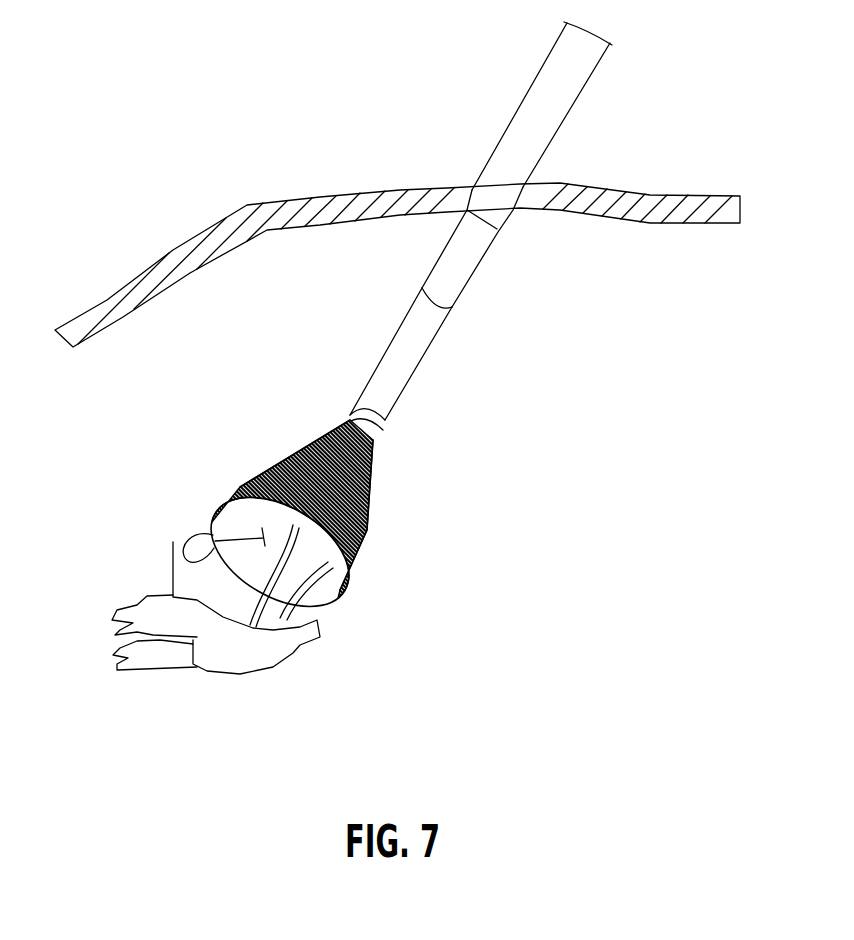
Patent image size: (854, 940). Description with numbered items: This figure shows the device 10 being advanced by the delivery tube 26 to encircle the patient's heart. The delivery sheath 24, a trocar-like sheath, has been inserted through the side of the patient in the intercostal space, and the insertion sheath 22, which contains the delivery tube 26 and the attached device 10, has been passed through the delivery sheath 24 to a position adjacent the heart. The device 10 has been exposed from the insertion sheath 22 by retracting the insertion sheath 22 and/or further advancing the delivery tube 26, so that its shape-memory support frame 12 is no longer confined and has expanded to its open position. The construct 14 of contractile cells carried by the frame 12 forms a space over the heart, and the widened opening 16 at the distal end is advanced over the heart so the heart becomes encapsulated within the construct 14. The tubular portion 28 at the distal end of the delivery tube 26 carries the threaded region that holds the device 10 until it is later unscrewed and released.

The device 10 is at (387, 543).
The support frame 12 is at (370, 493).
The construct 14 is at (290, 453).
The widened opening 16 is at (180, 542).
The insertion sheath 22 is at (483, 260).
The delivery sheath 24 is at (563, 115).
The delivery tube 26 is at (423, 340).
The tubular portion 28 is at (380, 427).